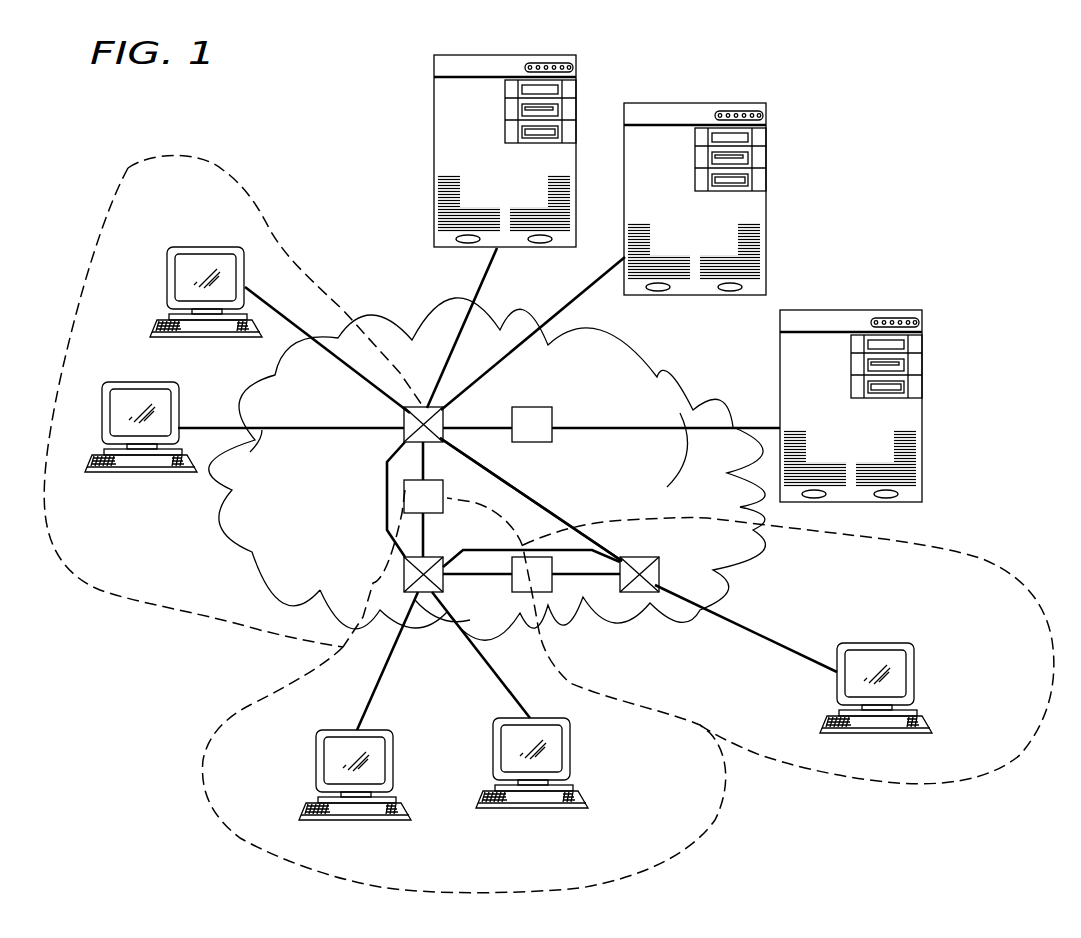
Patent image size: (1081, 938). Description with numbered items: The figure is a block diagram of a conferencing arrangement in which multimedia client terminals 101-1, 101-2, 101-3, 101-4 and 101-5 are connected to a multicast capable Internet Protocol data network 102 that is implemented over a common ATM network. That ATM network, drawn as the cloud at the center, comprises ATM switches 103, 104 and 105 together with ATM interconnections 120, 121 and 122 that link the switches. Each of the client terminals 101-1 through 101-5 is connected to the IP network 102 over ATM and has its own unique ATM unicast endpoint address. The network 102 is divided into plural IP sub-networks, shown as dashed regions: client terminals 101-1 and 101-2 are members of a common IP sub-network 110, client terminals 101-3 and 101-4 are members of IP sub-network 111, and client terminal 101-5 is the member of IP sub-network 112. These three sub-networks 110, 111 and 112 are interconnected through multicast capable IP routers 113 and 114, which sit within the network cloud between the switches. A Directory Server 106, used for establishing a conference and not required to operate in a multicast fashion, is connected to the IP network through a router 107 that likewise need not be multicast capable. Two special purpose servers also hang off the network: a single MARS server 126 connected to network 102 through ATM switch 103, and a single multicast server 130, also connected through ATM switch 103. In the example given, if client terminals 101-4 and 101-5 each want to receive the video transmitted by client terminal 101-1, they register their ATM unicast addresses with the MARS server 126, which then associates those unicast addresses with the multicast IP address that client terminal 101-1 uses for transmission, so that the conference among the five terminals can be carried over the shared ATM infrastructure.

The multimedia client terminal 101-1 is at (212, 247).
The multimedia client terminal 101-2 is at (138, 473).
The multimedia client terminal 101-3 is at (318, 760).
The multimedia client terminal 101-4 is at (571, 752).
The multimedia client terminal 101-5 is at (912, 663).
The multicast capable IP data network 102 is at (250, 573).
The ATM switch 103 is at (407, 405).
The ATM switch 104 is at (445, 595).
The ATM switch 105 is at (660, 571).
The Directory Server 106 is at (825, 310).
The router 107 is at (536, 407).
The IP sub-network 110 is at (125, 186).
The IP sub-network 111 is at (200, 793).
The IP sub-network 112 is at (990, 560).
The multicast capable IP router 113 is at (445, 490).
The multicast capable IP router 114 is at (550, 592).
The ATM interconnection 120 is at (387, 470).
The ATM interconnection 121 is at (510, 549).
The ATM interconnection 122 is at (583, 513).
The MARS server 126 is at (677, 103).
The multicast server 130 is at (437, 113).